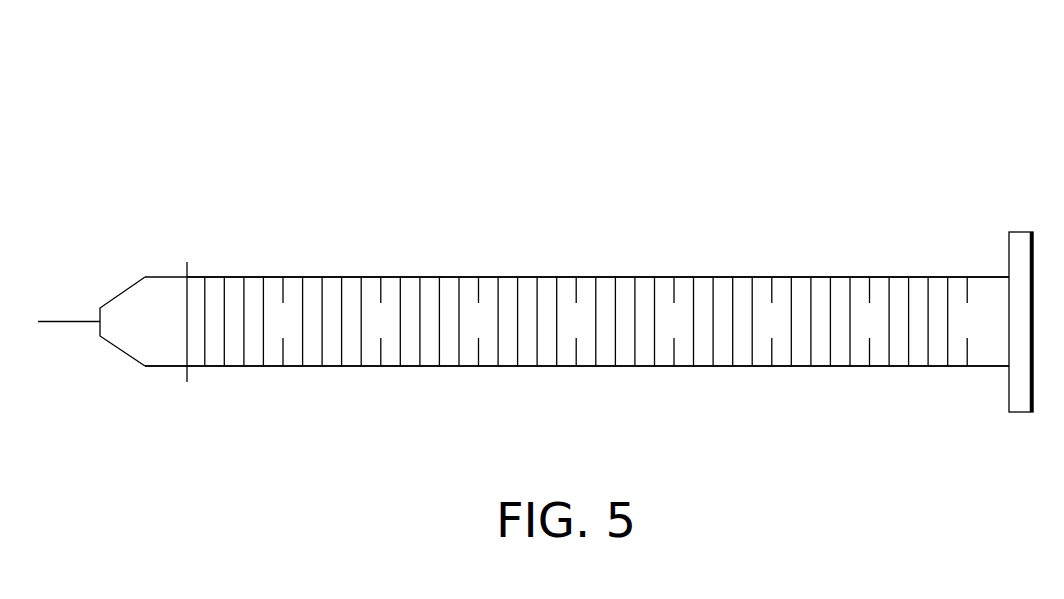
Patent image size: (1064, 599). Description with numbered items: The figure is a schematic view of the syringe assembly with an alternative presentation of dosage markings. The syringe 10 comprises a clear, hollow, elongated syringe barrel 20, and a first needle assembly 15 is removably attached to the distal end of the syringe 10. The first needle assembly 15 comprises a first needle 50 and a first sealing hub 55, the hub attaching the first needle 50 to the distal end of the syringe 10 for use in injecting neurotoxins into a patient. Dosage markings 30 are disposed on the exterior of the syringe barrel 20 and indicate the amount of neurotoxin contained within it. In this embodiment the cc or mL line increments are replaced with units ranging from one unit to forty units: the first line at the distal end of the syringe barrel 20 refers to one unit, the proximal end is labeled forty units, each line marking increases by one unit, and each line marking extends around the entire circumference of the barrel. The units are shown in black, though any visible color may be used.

The syringe 10 is at (553, 153).
The first needle assembly 15 is at (93, 243).
The syringe barrel 20 is at (413, 252).
The dosage markings 30 is at (713, 277).
The first needle 50 is at (72, 322).
The first sealing hub 55 is at (163, 366).